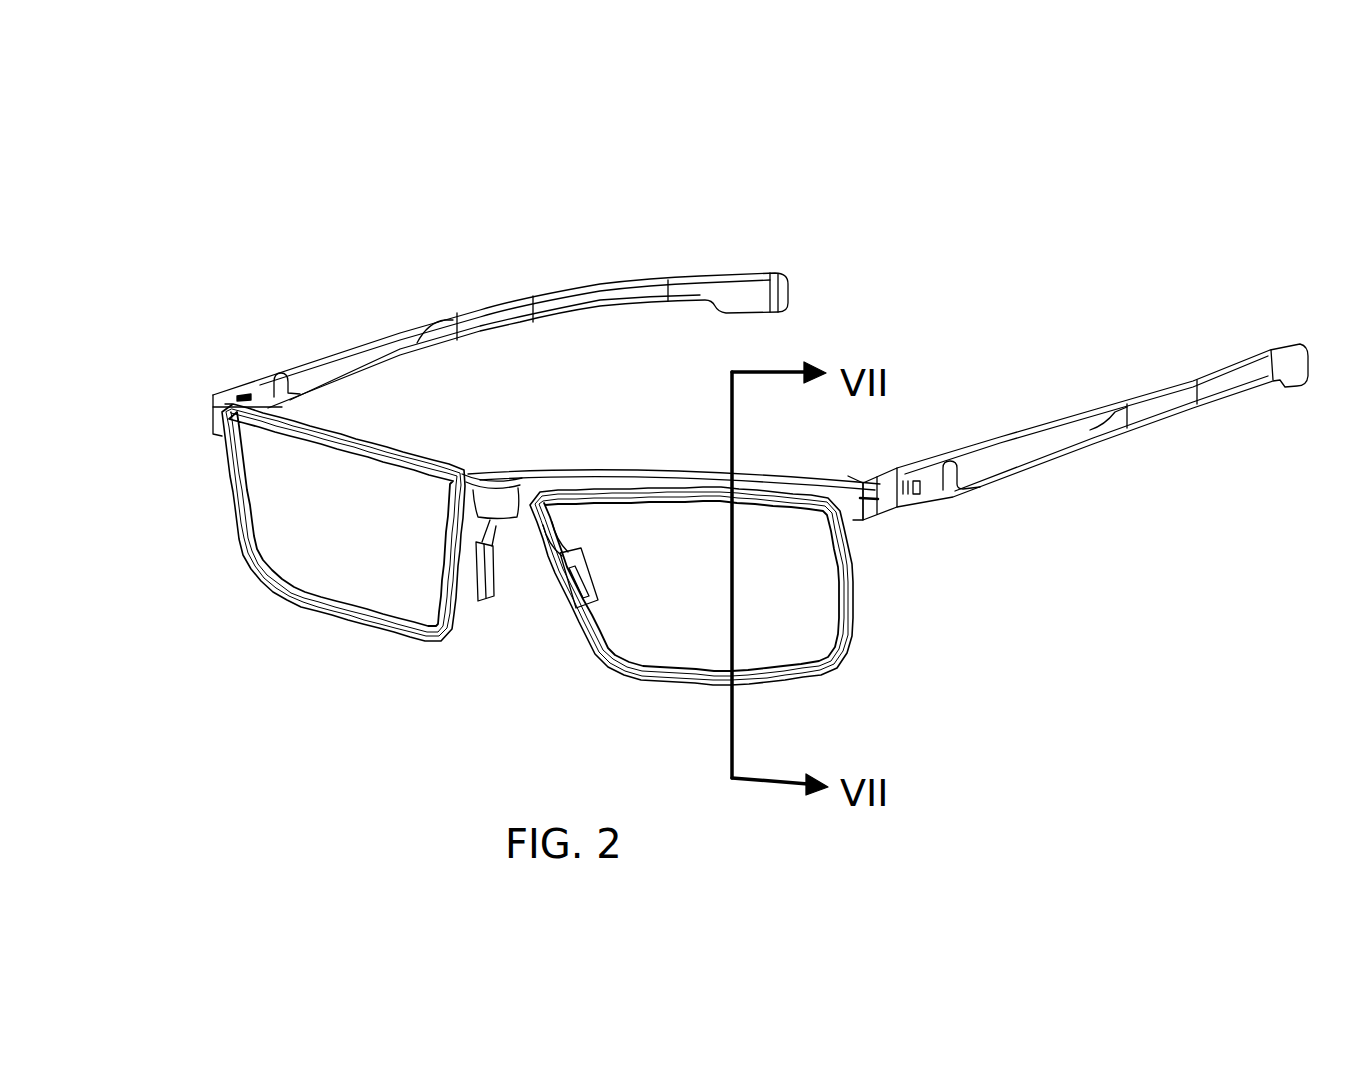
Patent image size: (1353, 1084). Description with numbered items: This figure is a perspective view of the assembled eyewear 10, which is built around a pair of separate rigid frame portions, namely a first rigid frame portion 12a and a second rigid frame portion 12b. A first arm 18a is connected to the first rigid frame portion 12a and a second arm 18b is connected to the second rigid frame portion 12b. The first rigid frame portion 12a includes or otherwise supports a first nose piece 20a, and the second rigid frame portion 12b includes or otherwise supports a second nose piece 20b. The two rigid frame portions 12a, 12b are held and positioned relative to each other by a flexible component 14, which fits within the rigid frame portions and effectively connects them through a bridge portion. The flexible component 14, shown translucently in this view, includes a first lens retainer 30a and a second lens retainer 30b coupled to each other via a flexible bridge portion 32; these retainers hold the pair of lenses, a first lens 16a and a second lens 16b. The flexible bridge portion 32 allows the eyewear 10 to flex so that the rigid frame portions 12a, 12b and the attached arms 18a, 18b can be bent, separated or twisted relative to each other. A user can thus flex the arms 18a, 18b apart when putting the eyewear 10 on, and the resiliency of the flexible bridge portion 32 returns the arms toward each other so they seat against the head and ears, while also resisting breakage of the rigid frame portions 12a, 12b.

The eyewear 10 is at (700, 461).
The first rigid frame portion 12a is at (383, 443).
The second rigid frame portion 12b is at (638, 473).
The flexible component 14 is at (531, 499).
The first lens 16a is at (273, 482).
The second lens 16b is at (750, 563).
The first arm 18a is at (593, 290).
The second arm 18b is at (1030, 438).
The first nose piece 20a is at (497, 605).
The second nose piece 20b is at (590, 605).
The first lens retainer 30a is at (222, 463).
The second lens retainer 30b is at (843, 538).
The flexible bridge portion 32 is at (505, 468).